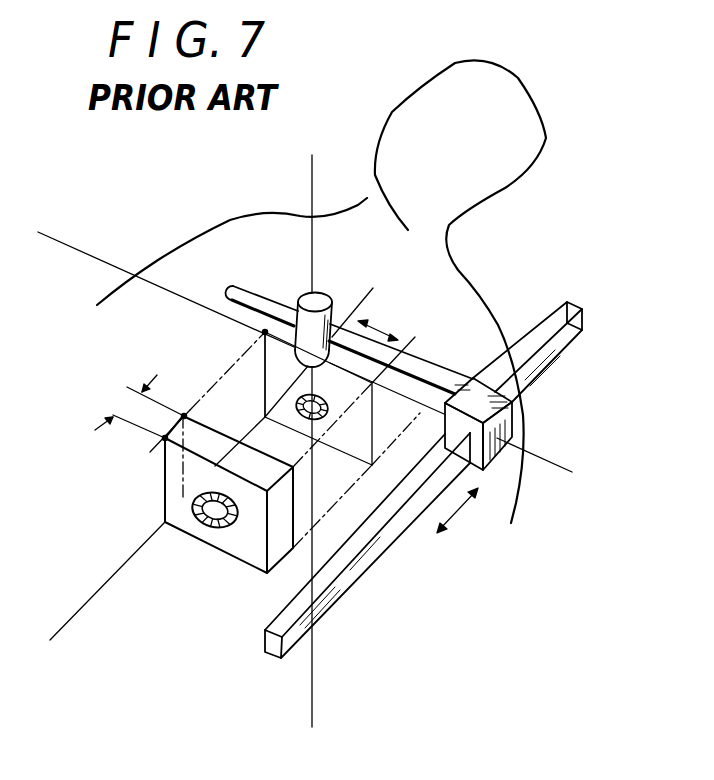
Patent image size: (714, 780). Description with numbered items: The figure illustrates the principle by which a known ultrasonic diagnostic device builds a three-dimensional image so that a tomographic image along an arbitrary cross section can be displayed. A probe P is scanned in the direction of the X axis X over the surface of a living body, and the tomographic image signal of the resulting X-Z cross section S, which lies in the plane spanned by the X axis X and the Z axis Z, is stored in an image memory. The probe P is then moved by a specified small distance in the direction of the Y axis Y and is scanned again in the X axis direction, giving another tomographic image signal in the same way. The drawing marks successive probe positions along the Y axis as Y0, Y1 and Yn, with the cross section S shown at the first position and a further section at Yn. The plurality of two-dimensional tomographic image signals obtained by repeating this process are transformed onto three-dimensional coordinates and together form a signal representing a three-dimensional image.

The probe P is at (300, 295).
The X-Z cross section S is at (165, 503).
The X axis X is at (306, 352).
The Y axis Y is at (212, 464).
The Z axis Z is at (314, 443).
The Y position n of the block Yn is at (244, 369).
The Y position 1 of the block Y1 is at (163, 398).
The Y position 0 of the block Y0 is at (140, 438).